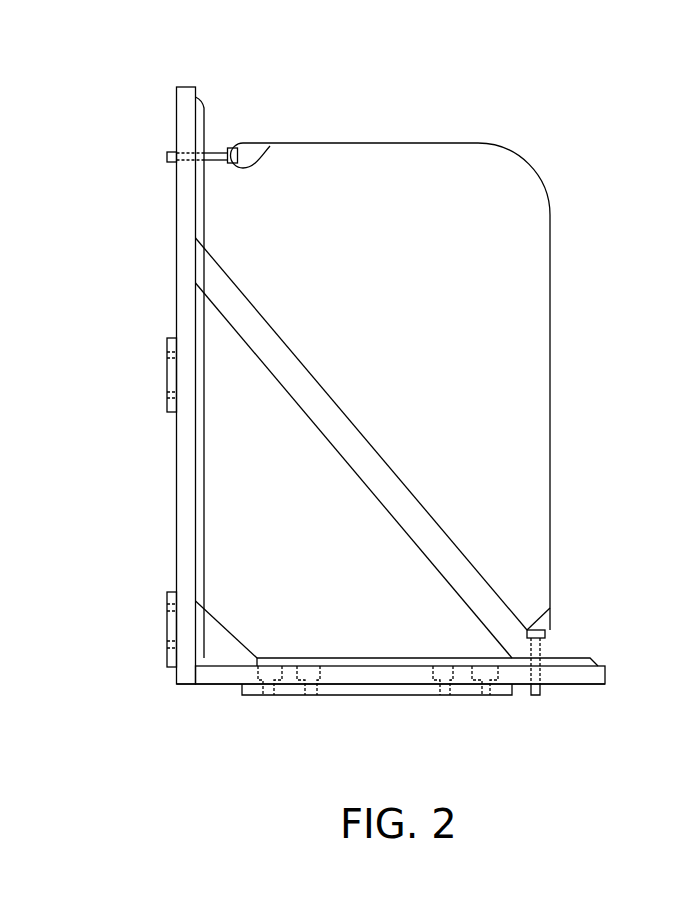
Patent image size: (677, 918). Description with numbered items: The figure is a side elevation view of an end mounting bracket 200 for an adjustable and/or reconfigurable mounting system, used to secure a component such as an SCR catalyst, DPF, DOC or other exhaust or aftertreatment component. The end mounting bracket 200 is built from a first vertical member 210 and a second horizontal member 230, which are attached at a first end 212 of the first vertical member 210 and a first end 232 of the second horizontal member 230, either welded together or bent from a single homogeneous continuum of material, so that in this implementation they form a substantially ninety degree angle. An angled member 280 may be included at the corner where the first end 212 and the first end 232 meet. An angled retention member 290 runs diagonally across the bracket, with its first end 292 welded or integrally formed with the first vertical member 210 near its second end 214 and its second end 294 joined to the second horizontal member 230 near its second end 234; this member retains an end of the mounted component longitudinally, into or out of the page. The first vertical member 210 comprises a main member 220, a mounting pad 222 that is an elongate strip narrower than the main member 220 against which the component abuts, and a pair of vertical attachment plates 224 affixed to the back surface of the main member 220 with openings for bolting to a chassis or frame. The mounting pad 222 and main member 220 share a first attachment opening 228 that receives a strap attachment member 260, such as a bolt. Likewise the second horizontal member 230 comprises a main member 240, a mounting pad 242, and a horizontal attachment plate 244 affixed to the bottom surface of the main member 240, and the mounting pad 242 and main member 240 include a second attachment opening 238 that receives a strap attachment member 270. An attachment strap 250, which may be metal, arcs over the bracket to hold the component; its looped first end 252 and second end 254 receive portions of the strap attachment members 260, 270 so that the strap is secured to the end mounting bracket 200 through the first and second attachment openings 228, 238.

The end mounting bracket 200 is at (624, 152).
The first vertical member 210 is at (133, 436).
The first end of the first vertical member 212 is at (148, 678).
The second end of the first vertical member 214 is at (150, 86).
The main member 220 is at (190, 87).
The mounting pad 222 is at (205, 119).
The vertical attachment plates 224 is at (167, 378).
The first attachment opening 228 is at (168, 157).
The second horizontal member 230 is at (373, 609).
The first end of the second horizontal member 232 is at (214, 713).
The second end of the second horizontal member 234 is at (601, 703).
The second attachment opening 238 is at (542, 668).
The main member 240 is at (407, 678).
The mounting pad 242 is at (300, 659).
The horizontal attachment plate 244 is at (325, 692).
The attachment strap 250 is at (551, 318).
The first end of the attachment strap 252 is at (304, 125).
The second end of the attachment strap 254 is at (602, 596).
The strap attachment member 260 is at (255, 152).
The strap attachment member 270 is at (547, 636).
The angled member 280 is at (237, 639).
The angled retention member 290 is at (404, 420).
The first end of the angled retention member 292 is at (233, 232).
The second end of the angled retention member 294 is at (523, 601).